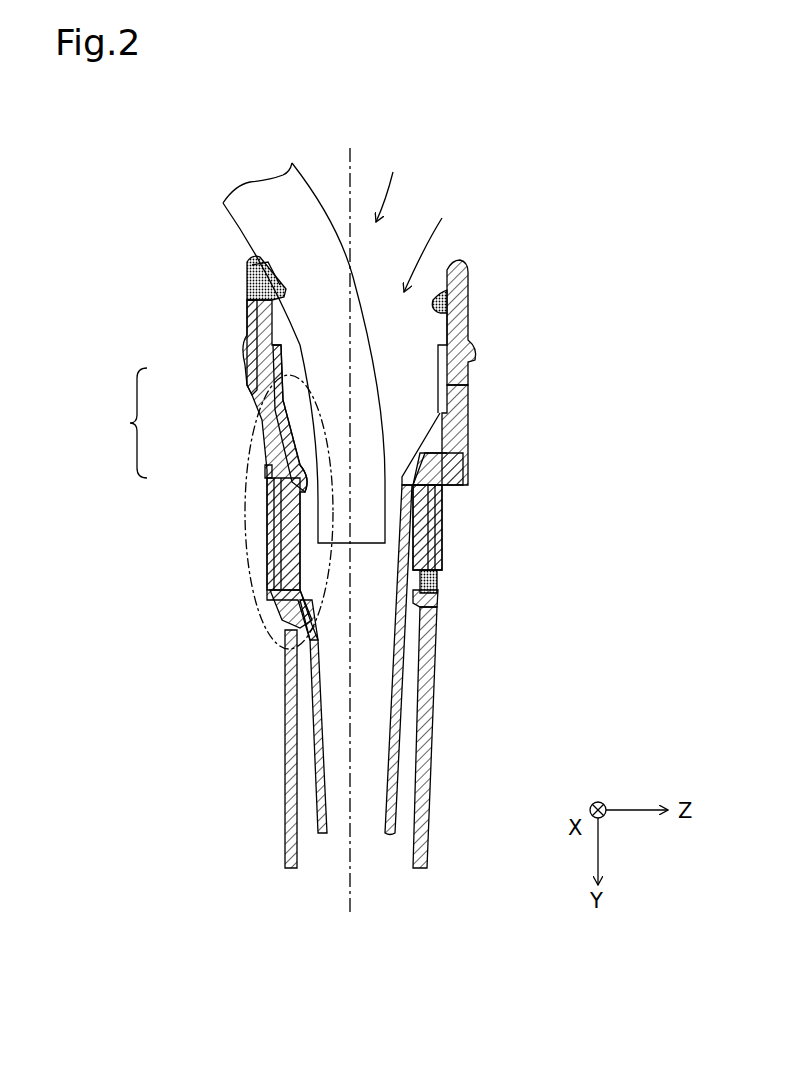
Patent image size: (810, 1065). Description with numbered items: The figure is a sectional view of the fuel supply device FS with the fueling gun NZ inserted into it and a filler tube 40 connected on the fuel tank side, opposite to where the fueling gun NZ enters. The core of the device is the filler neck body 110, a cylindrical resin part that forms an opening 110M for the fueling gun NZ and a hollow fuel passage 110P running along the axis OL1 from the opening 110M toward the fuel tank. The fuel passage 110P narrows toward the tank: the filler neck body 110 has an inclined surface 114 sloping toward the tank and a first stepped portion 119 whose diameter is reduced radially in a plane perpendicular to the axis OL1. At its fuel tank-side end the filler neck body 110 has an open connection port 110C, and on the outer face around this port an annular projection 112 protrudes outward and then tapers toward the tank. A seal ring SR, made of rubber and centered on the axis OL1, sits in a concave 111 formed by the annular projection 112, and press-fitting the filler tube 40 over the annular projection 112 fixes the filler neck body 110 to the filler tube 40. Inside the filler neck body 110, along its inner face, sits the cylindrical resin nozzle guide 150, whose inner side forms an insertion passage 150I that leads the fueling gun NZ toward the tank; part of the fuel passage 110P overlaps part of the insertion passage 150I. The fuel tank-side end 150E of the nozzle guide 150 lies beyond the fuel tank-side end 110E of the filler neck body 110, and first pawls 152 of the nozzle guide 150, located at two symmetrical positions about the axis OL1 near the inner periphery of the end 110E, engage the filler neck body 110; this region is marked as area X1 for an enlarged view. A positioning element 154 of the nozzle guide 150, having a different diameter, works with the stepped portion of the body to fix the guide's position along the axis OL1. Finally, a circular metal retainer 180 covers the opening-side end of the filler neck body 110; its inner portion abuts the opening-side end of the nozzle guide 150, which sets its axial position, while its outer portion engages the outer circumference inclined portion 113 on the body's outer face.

The axis OL1 is at (346, 514).
The fueling gun NZ is at (243, 207).
The opening 110M is at (406, 185).
The fuel passage 110P is at (442, 241).
The filler neck body 110 is at (270, 437).
The outer circumference inclined portion 113 is at (262, 330).
The retainer 180 is at (245, 362).
The nozzle guide 150 is at (268, 470).
The inclined surface 114 is at (268, 512).
The first pawl 152 is at (302, 635).
The fuel tank-side end 110E is at (298, 622).
The filler tube 40 is at (285, 736).
The area X1 is at (243, 565).
The fuel supply device FS is at (117, 423).
The positioning element 154 is at (470, 355).
The connection port 110C is at (362, 606).
The insertion passage 150I is at (397, 465).
The first stepped portion 119 is at (445, 442).
The annular projection 112 is at (440, 533).
The seal ring SR is at (430, 586).
The concave 111 is at (440, 603).
The fuel tank-side end 150E is at (390, 835).